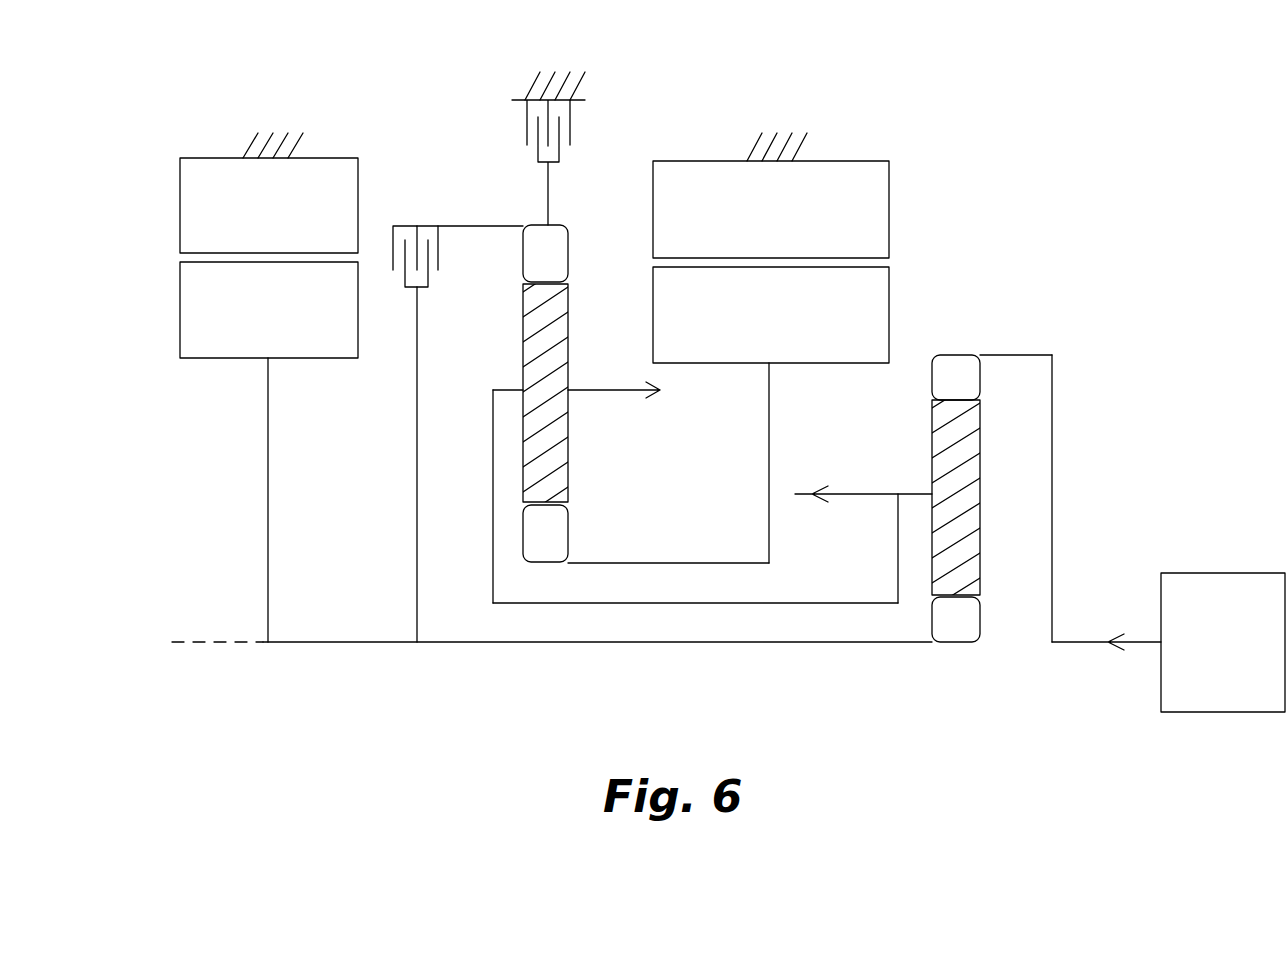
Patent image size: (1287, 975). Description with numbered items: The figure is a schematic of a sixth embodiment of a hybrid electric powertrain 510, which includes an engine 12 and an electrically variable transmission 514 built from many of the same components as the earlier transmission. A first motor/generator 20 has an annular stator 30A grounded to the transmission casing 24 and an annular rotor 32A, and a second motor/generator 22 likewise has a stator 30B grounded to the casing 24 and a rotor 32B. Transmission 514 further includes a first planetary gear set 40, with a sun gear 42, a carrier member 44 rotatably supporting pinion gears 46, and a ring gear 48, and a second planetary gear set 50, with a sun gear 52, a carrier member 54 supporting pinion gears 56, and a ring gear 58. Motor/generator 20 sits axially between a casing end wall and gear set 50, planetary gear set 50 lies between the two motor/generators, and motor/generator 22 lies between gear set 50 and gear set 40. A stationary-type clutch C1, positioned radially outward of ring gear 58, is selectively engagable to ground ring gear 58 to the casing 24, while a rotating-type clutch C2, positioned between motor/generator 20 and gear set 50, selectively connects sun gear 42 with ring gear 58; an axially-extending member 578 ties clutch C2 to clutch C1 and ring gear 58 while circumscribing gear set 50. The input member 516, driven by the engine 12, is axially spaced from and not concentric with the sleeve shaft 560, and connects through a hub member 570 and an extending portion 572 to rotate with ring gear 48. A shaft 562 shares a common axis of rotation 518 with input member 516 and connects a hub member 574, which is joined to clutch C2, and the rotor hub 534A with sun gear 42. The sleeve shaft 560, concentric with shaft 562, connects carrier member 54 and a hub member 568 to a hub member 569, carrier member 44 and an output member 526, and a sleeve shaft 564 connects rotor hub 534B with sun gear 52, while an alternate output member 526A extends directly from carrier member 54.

The powertrain 510 is at (1040, 82).
The electrically variable transmission 514 is at (160, 116).
The first motor/generator 20 is at (148, 268).
The second motor/generator 22 is at (915, 284).
The stator 30A is at (269, 205).
The rotor 32A is at (269, 310).
The stator 30B is at (771, 209).
The rotor 32B is at (771, 315).
The engine 12 is at (1223, 642).
The transmission casing 24 is at (250, 148).
The stationary-type clutch C1 is at (602, 110).
The rotating-type clutch C2 is at (380, 224).
The axially-extending member 578 is at (484, 224).
The second planetary gear set 50 is at (600, 478).
The sun gear 52 is at (568, 538).
The carrier member 54 is at (506, 388).
The pinion gears 56 is at (568, 316).
The ring gear 58 is at (568, 258).
The hub member 568 is at (492, 463).
The sleeve shaft 560 is at (812, 602).
The alternate output member 526A is at (612, 394).
The rotor hub 534B is at (770, 432).
The sleeve shaft 564 is at (721, 562).
The carrier member 44 is at (912, 492).
The output member 526 is at (853, 500).
The hub member 569 is at (900, 563).
The first planetary gear set 40 is at (1000, 525).
The sun gear 42 is at (953, 645).
The pinion gears 46 is at (980, 468).
The ring gear 48 is at (932, 380).
The extending portion 572 is at (1010, 354).
The hub member 570 is at (1053, 510).
The input member 516 is at (1092, 645).
The rotor hub 534A is at (268, 448).
The hub member 574 is at (417, 445).
The shaft 562 is at (666, 645).
The axis of rotation 518 is at (214, 645).